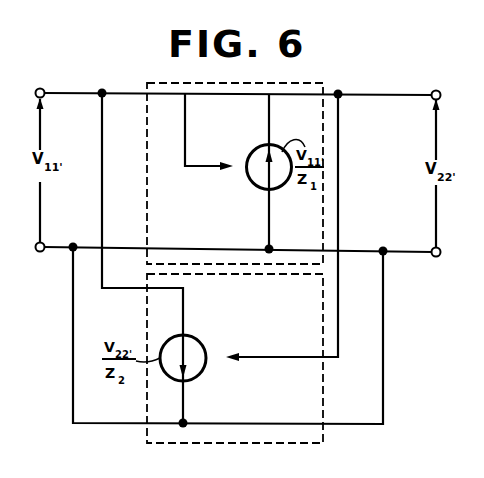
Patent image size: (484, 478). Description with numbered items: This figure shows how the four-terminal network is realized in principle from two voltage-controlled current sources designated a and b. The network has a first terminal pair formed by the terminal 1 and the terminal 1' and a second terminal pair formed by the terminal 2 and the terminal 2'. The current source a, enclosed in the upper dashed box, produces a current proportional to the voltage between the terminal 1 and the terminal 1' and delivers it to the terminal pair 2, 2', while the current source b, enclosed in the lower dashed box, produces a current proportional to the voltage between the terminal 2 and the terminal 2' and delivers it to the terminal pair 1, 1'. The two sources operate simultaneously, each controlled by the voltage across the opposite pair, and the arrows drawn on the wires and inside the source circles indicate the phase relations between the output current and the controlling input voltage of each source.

The terminal 1 is at (34, 88).
The terminal 1' is at (33, 249).
The terminal 2 is at (443, 89).
The terminal 2' is at (446, 250).
The voltage-controlled current source a is at (302, 83).
The voltage-controlled current source b is at (323, 443).